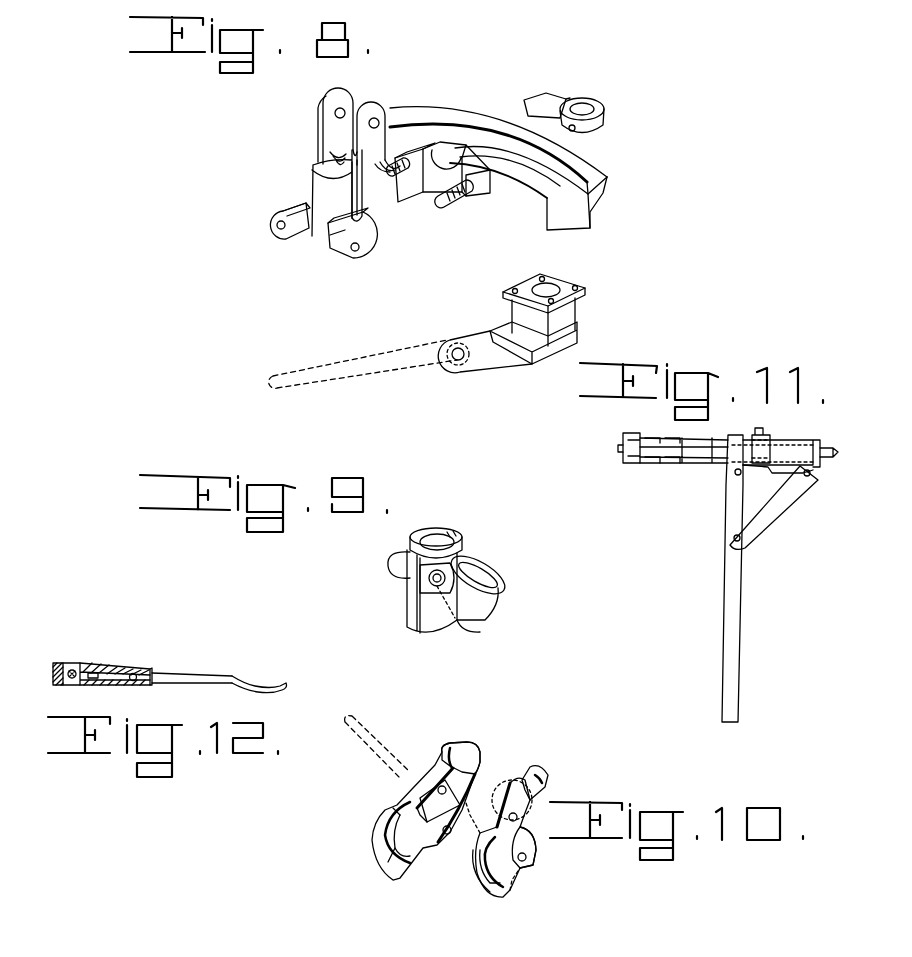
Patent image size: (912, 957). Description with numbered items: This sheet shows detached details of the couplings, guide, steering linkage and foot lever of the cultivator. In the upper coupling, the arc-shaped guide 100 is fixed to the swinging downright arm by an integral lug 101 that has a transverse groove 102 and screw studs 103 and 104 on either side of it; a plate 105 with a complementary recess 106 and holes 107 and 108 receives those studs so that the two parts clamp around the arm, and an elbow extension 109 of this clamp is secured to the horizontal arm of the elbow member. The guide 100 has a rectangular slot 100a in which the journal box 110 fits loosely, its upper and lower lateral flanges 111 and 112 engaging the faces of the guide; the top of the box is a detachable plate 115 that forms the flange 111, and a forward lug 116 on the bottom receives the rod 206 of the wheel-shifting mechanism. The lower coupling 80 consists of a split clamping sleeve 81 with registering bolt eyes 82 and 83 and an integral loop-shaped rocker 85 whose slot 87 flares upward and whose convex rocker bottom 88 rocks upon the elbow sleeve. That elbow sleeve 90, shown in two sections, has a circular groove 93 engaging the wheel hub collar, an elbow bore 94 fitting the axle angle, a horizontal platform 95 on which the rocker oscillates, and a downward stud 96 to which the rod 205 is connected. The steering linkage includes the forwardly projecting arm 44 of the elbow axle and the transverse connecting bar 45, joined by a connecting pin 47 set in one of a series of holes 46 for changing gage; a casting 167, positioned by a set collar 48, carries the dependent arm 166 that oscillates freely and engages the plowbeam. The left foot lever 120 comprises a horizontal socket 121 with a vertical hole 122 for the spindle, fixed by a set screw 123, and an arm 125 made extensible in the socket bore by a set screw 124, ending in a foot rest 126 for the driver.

In FIG. 8, the forwardly projecting arm 44 is at (547, 100).
In FIG. 11, the forwardly projecting arm 44 is at (623, 450).
In FIG. 11, the transverse connecting bar 45 is at (720, 457).
In FIG. 11, the series of holes 46 is at (657, 460).
In FIG. 11, the connecting pin 47 is at (630, 432).
In FIG. 11, the set collar 48 is at (760, 443).
In FIG. 9, the coupling 80 is at (432, 536).
In FIG. 9, the split clamping sleeve 81 is at (448, 613).
In FIG. 9, the bolt eye 82 is at (398, 562).
In FIG. 9, the bolt eye 83 is at (417, 577).
In FIG. 9, the loop-shaped rocker 85 is at (480, 605).
In FIG. 9, the slot 87 is at (477, 572).
In FIG. 9, the convex rocker bottom 88 is at (465, 625).
In FIG. 10, the elbow sleeve 90 is at (426, 827).
In FIG. 10, the circular groove 93 is at (398, 850).
In FIG. 10, the elbow bore 94 is at (475, 788).
In FIG. 10, the horizontal flange or platform 95 is at (468, 748).
In FIG. 10, the downward stud 96 is at (507, 892).
In FIG. 8, the arc-shaped guide 100 is at (498, 158).
In FIG. 8, the rectangular slot 100a is at (550, 187).
In FIG. 8, the lug 101 is at (417, 173).
In FIG. 8, the transverse groove 102 is at (438, 175).
In FIG. 8, the screw stud 103 is at (382, 170).
In FIG. 8, the screw stud 104 is at (468, 187).
In FIG. 8, the plate 105 is at (333, 240).
In FIG. 8, the transverse groove or recess 106 is at (343, 218).
In FIG. 8, the hole 107 is at (276, 224).
In FIG. 8, the hole 108 is at (355, 247).
In FIG. 8, the elbow extension 109 is at (313, 158).
In FIG. 8, the journal box 110 is at (568, 322).
In FIG. 8, the lateral flange 111 is at (505, 293).
In FIG. 8, the lateral flange 112 is at (515, 350).
In FIG. 8, the detachable plate 115 is at (548, 284).
In FIG. 8, the forward lug 116 is at (478, 360).
In FIG. 12, the foot lever 120 is at (113, 687).
In FIG. 12, the horizontal socket 121 is at (112, 665).
In FIG. 12, the vertical hole 122 is at (65, 665).
In FIG. 12, the set screw 123 is at (72, 668).
In FIG. 12, the set screw 124 is at (137, 670).
In FIG. 12, the arm 125 is at (178, 677).
In FIG. 12, the foot rest 126 is at (248, 686).
In FIG. 11, the dependent arm 166 is at (735, 585).
In FIG. 11, the casting 167 is at (790, 450).
In FIG. 10, the rod 205 is at (380, 756).
In FIG. 8, the rod 206 is at (363, 360).